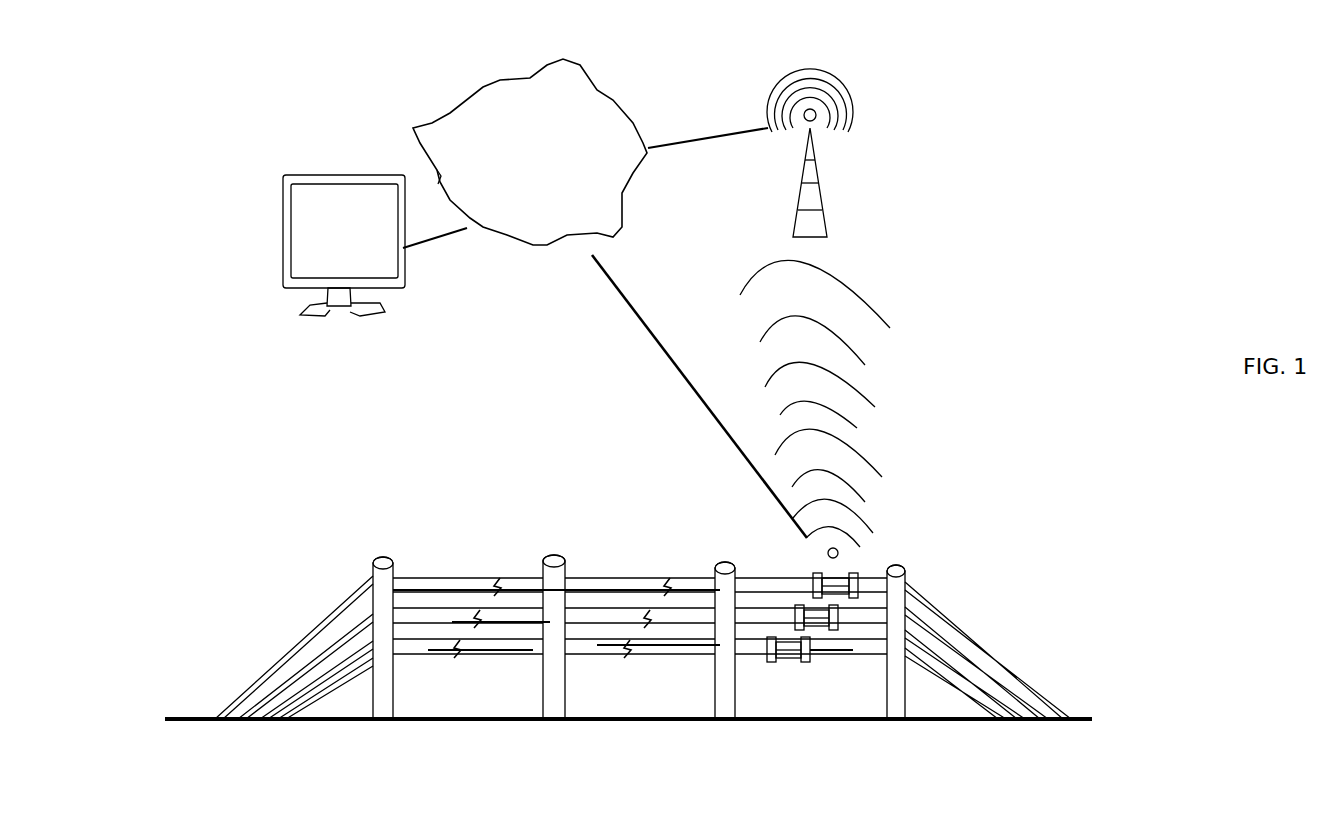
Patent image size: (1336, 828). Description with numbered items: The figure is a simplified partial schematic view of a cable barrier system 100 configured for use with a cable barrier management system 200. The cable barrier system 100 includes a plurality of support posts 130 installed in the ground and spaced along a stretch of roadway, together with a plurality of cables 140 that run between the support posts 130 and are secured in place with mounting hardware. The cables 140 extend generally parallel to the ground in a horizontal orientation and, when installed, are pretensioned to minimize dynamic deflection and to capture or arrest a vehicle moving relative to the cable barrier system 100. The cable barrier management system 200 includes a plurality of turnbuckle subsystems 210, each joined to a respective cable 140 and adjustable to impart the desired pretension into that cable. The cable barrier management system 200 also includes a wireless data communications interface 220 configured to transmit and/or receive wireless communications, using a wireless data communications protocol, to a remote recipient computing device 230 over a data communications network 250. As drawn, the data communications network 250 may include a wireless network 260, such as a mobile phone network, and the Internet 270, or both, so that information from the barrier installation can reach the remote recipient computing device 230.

The cable barrier system 100 is at (628, 591).
The support posts 130 is at (395, 685).
The cables 140 is at (462, 567).
The cable barrier management system 200 is at (1010, 331).
The turnbuckle subsystems 210 is at (800, 568).
The wireless data communications interface 220 is at (882, 537).
The remote recipient computing device 230 is at (360, 250).
The data communications network 250 is at (633, 90).
The wireless network 260 is at (873, 130).
The Internet 270 is at (497, 115).